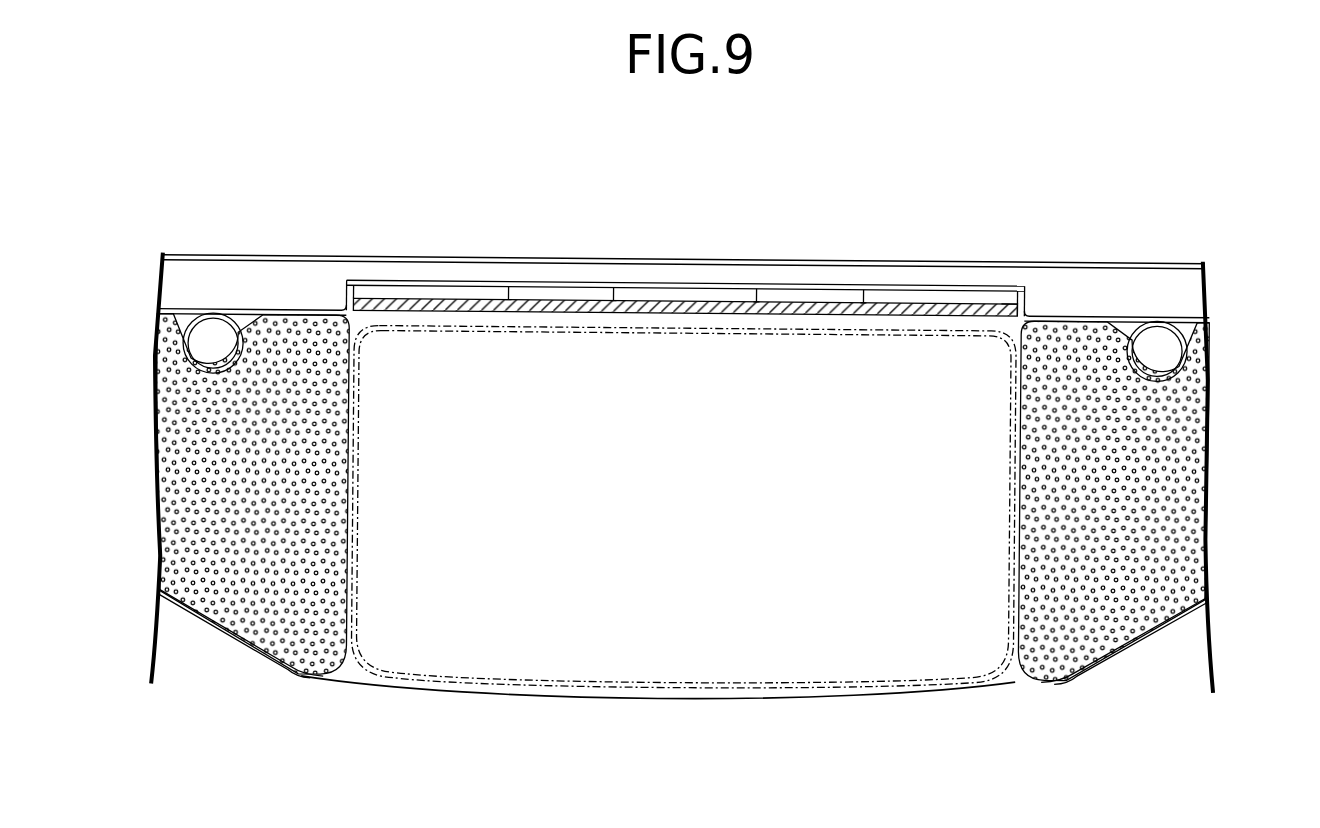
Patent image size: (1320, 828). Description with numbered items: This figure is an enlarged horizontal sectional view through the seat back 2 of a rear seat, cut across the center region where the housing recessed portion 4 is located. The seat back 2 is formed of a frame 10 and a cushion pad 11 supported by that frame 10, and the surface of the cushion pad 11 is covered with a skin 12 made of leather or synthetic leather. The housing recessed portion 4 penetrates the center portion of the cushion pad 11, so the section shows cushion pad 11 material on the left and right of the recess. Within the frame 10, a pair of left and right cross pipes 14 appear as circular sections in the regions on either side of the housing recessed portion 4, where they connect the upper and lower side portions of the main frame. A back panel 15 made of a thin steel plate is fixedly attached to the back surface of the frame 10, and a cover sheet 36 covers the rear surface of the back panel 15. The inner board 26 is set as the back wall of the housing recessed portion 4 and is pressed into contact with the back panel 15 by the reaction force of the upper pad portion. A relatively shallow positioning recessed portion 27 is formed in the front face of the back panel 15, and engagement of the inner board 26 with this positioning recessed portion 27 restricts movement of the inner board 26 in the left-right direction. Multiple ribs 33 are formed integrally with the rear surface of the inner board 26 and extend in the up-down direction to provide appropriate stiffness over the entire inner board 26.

The seat back 2 is at (1190, 438).
The housing recessed portion 4 is at (502, 648).
The frame 10 is at (236, 309).
The cushion pad 11 is at (1165, 506).
The skin 12 is at (1130, 652).
The cross pipes 14 is at (190, 312).
The back panel 15 is at (948, 283).
The inner board 26 is at (690, 315).
The positioning recessed portion 27 is at (985, 305).
The ribs 33 is at (352, 284).
The cover sheet 36 is at (750, 259).